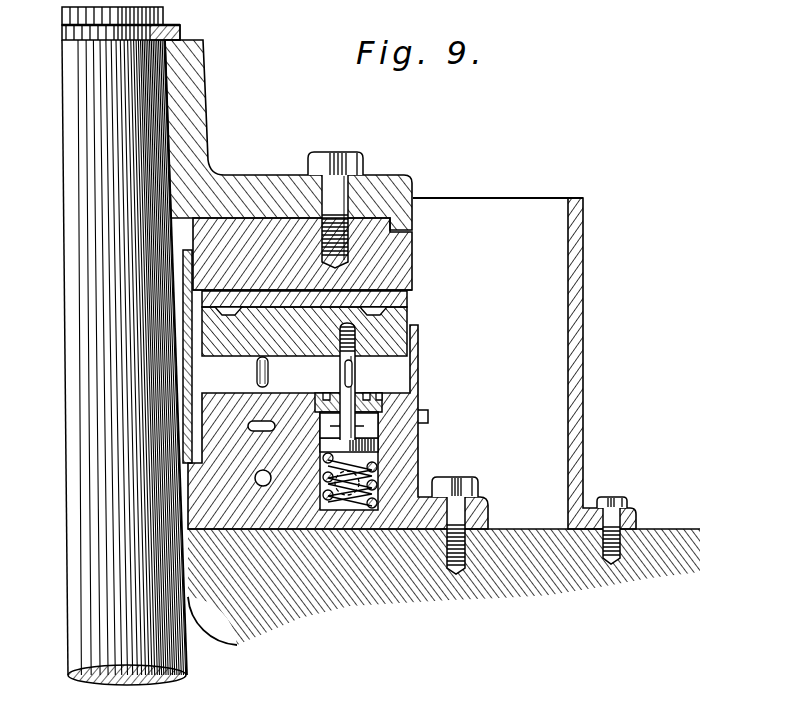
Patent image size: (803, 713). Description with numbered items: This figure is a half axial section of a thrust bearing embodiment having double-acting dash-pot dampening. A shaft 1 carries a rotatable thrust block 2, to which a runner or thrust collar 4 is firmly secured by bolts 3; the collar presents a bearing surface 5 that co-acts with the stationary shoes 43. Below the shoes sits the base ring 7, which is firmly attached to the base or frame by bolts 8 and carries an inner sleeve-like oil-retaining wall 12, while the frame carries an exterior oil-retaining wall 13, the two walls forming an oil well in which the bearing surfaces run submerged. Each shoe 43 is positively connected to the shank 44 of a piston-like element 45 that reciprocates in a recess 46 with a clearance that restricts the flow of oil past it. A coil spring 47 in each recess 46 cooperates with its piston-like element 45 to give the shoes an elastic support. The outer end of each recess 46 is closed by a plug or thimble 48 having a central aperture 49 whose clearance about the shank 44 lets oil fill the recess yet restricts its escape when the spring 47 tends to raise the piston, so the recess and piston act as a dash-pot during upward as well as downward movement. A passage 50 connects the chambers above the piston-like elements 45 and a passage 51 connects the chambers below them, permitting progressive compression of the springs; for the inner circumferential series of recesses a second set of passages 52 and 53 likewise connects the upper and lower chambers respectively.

The shaft 1 is at (80, 351).
The thrust block 2 is at (410, 152).
The bolts 3 is at (350, 152).
The thrust collar 4 is at (403, 253).
The bearing surface 5 is at (400, 288).
The base ring 7 is at (186, 534).
The bolts 8 is at (478, 482).
The inner oil-retaining wall 12 is at (194, 384).
The exterior oil-retaining wall 13 is at (575, 380).
The shoes 43 is at (407, 320).
The shanks 44 is at (400, 358).
The piston-like elements 45 is at (378, 428).
The recesses 46 is at (322, 528).
The coil springs 47 is at (358, 512).
The plug or thimble 48 is at (320, 395).
The central aperture 49 is at (356, 393).
The passage 50 is at (420, 412).
The passage 51 is at (378, 450).
The passage 52 is at (248, 426).
The passage 53 is at (255, 479).